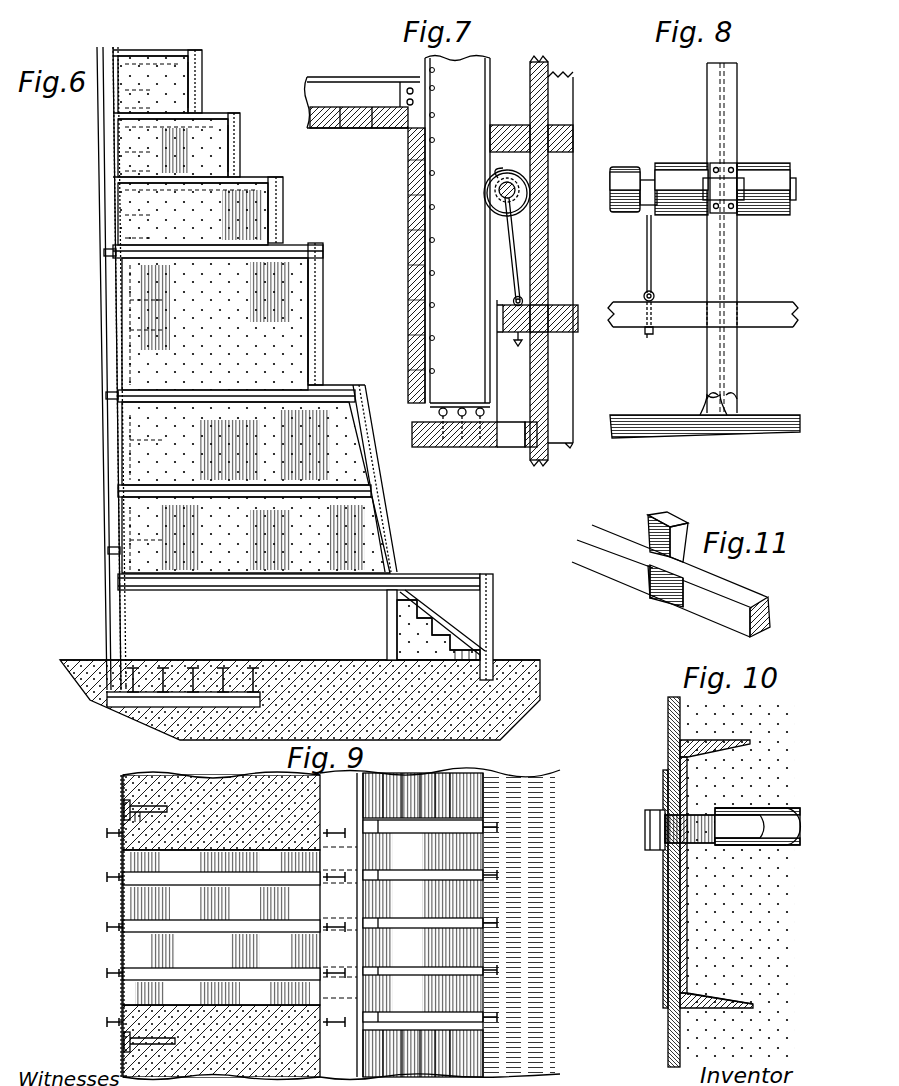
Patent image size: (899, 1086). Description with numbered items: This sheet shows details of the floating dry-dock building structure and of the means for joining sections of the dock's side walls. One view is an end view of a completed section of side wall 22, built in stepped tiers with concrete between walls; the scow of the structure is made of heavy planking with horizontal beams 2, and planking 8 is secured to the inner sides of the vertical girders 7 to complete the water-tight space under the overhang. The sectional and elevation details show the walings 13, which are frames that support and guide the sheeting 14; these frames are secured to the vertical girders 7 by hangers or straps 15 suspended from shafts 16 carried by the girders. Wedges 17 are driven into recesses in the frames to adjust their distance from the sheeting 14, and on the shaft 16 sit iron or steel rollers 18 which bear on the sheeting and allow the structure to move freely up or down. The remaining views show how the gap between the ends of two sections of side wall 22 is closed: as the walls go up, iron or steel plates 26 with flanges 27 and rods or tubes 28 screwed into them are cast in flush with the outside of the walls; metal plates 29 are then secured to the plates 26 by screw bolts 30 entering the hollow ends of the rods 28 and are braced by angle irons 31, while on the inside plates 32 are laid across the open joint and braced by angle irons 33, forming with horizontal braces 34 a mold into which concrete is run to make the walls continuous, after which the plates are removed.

In FIG. 7, the horizontal beams 2 is at (316, 92).
In FIG. 7, the vertical girders 7 is at (474, 73).
In FIG. 8, the vertical girders 7 is at (737, 269).
In FIG. 7, the planking 8 is at (346, 121).
In FIG. 7, the walings 13 is at (513, 137).
In FIG. 8, the walings 13 is at (704, 322).
In FIG. 11, the walings 13 is at (769, 613).
In FIG. 7, the sheeting 14 is at (546, 243).
In FIG. 7, the hangers or straps 15 is at (512, 274).
In FIG. 8, the hangers or straps 15 is at (651, 278).
In FIG. 7, the shafts 16 is at (497, 201).
In FIG. 8, the shafts 16 is at (795, 200).
In FIG. 7, the wedges 17 is at (499, 327).
In FIG. 11, the wedges 17 is at (678, 523).
In FIG. 7, the rollers 18 is at (517, 193).
In FIG. 8, the rollers 18 is at (668, 178).
In FIG. 6, the side walls 22 is at (254, 314).
In FIG. 9, the side walls 22 is at (243, 779).
In FIG. 10, the plates 26 is at (679, 979).
In FIG. 9, the plates 26 is at (128, 808).
In FIG. 10, the flanges 27 is at (755, 1006).
In FIG. 10, the rods or tubes 28 is at (757, 826).
In FIG. 9, the rods or tubes 28 is at (145, 808).
In FIG. 10, the metal plates 29 is at (668, 918).
In FIG. 10, the screw bolts 30 is at (645, 827).
In FIG. 9, the screw bolts 30 is at (118, 811).
In FIG. 6, the angle irons 31 is at (105, 322).
In FIG. 9, the angle irons 31 is at (118, 877).
In FIG. 6, the plates 32 is at (310, 312).
In FIG. 9, the plates 32 is at (324, 909).
In FIG. 6, the angle irons 33 is at (318, 328).
In FIG. 9, the angle irons 33 is at (333, 867).
In FIG. 6, the horizontal braces 34 is at (199, 397).
In FIG. 9, the horizontal braces 34 is at (228, 925).